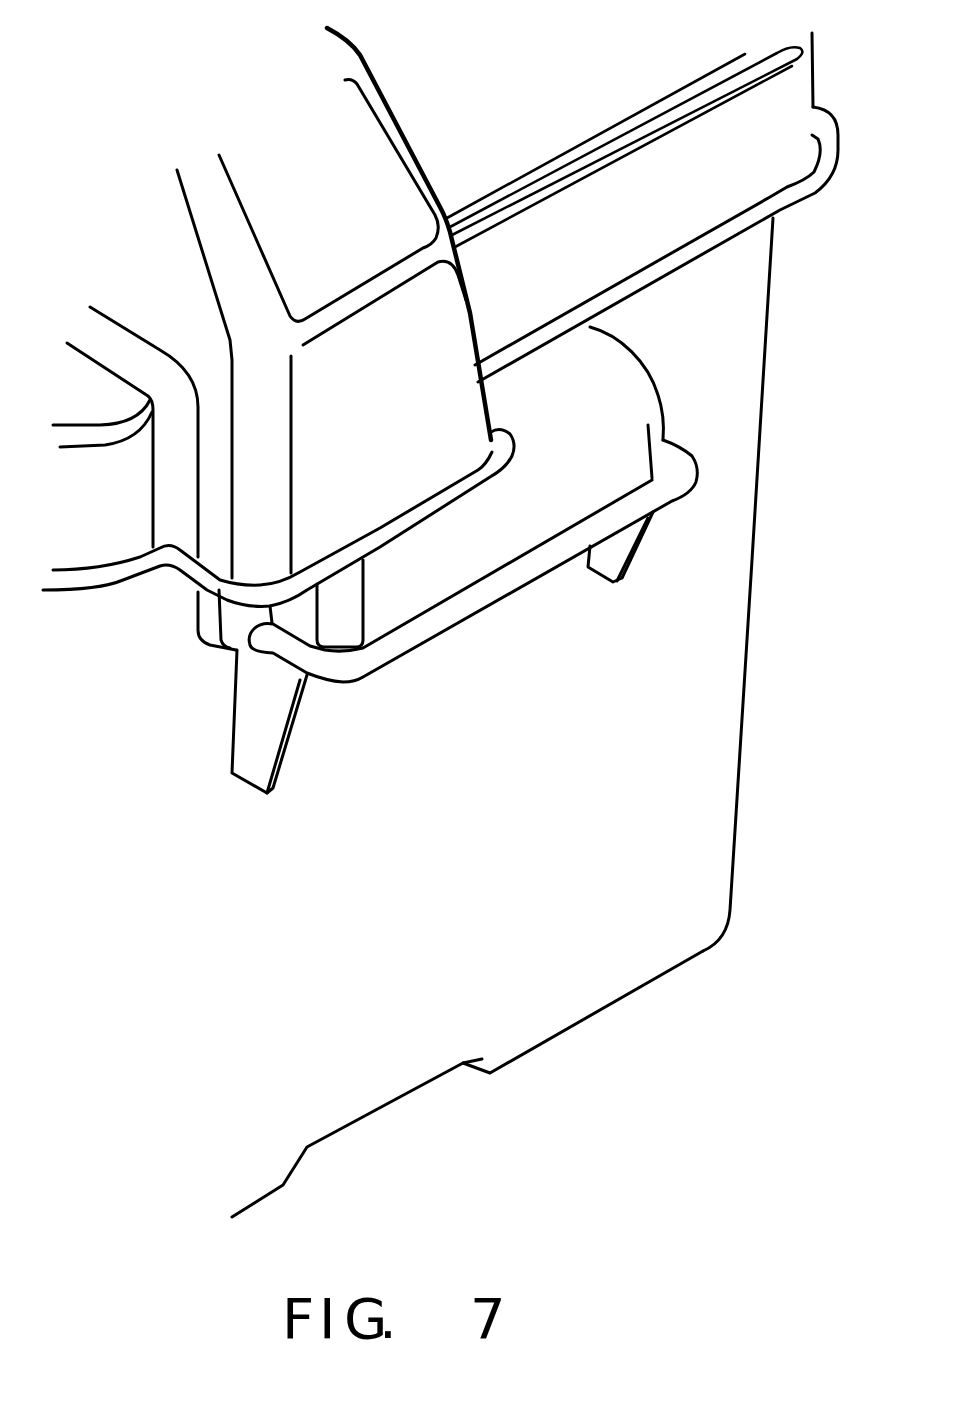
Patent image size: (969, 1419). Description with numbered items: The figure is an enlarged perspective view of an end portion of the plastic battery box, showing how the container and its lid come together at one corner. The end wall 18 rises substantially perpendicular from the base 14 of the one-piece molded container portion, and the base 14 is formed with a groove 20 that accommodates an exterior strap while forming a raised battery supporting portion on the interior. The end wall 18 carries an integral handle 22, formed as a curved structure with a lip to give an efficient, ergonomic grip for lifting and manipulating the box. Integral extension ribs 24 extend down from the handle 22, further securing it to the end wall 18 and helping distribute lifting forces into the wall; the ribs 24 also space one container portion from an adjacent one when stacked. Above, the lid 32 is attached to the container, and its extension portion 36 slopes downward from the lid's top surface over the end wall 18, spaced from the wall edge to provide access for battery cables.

The base 14 is at (600, 1010).
The end wall 18 is at (530, 816).
The groove 20 is at (403, 1098).
The handle 22 is at (600, 477).
The extension rib 24 is at (255, 720).
The lid 32 is at (548, 106).
The extension portion 36 is at (390, 458).